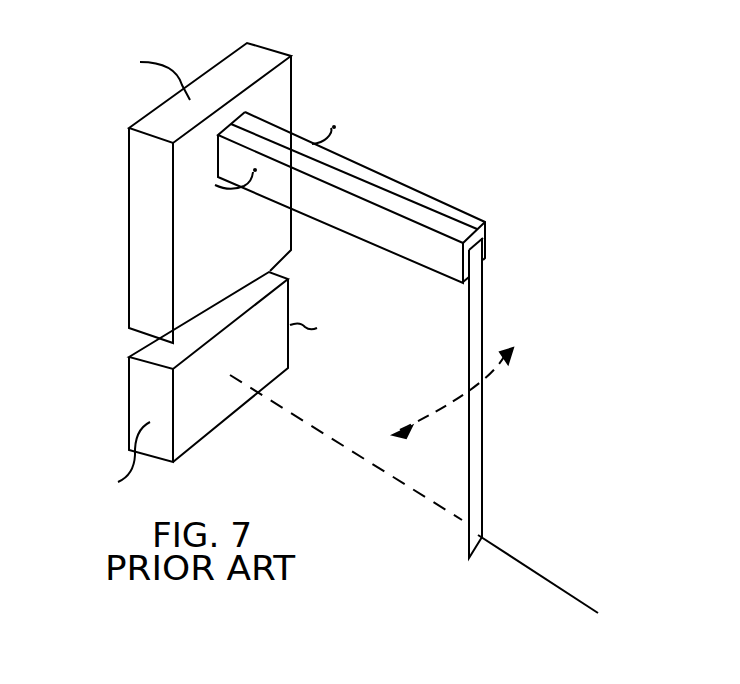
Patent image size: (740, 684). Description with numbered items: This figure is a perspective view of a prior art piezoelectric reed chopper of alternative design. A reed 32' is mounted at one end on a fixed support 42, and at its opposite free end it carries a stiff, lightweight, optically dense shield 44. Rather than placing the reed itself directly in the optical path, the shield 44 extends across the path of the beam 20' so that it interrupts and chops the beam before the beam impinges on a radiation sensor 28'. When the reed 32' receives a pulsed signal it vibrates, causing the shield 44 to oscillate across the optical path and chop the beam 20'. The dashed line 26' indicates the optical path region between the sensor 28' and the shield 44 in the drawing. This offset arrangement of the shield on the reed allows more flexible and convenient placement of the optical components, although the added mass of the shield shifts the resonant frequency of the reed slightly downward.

The fixed support 42 is at (190, 100).
The reed 32' is at (363, 197).
The shield 44 is at (472, 297).
The radiation sensor 28' is at (180, 377).
The pivot axis line 26' is at (346, 455).
The beam 20' is at (538, 597).